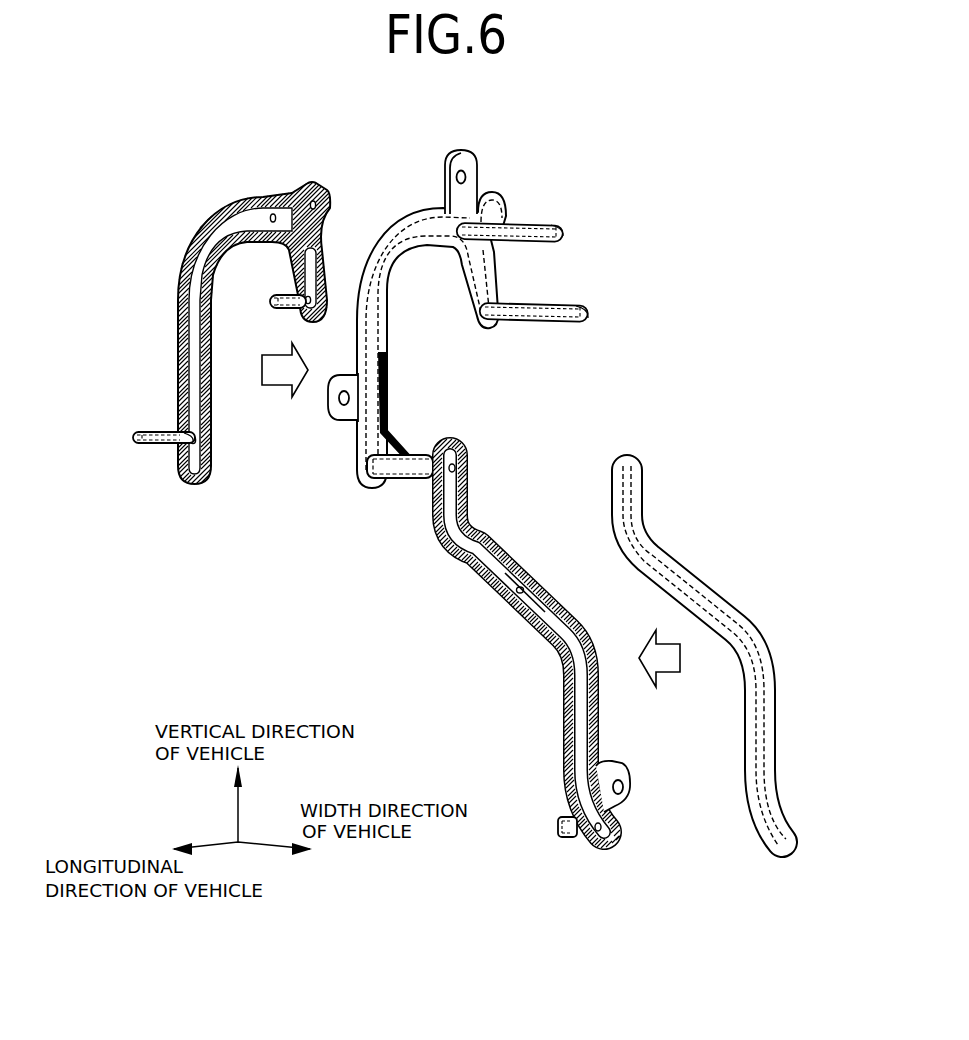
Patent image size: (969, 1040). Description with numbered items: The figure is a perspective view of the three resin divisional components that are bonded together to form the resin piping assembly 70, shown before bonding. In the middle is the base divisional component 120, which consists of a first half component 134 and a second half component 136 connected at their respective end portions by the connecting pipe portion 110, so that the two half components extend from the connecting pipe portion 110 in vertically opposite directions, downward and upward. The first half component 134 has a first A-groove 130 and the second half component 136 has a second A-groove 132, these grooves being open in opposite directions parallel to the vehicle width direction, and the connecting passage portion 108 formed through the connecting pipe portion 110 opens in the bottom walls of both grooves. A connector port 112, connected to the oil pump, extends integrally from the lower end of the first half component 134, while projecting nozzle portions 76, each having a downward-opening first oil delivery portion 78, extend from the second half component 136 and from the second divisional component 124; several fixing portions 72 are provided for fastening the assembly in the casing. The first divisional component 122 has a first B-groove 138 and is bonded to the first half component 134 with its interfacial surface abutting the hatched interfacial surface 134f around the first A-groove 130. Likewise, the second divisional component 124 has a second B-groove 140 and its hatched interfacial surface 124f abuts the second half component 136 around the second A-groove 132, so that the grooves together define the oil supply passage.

The resin piping assembly 70 is at (516, 500).
The fixing portion 72 is at (463, 165).
The projecting nozzle portion 76 is at (280, 297).
The first oil delivery portion 78 is at (165, 443).
The connecting passage portion 108 is at (412, 456).
The connecting pipe portion 110 is at (418, 350).
The connector port 112 is at (567, 839).
The base divisional component 120 is at (480, 659).
The first divisional component 122 is at (735, 655).
The second divisional component 124 is at (220, 328).
The interfacial surface 124f is at (212, 390).
The first A-groove 130 is at (468, 550).
The second A-groove 132 is at (373, 320).
The first half component 134 is at (515, 643).
The interfacial surface 134f is at (517, 563).
The second half component 136 is at (423, 325).
The first B-groove 138 is at (772, 666).
The second B-groove 140 is at (200, 316).